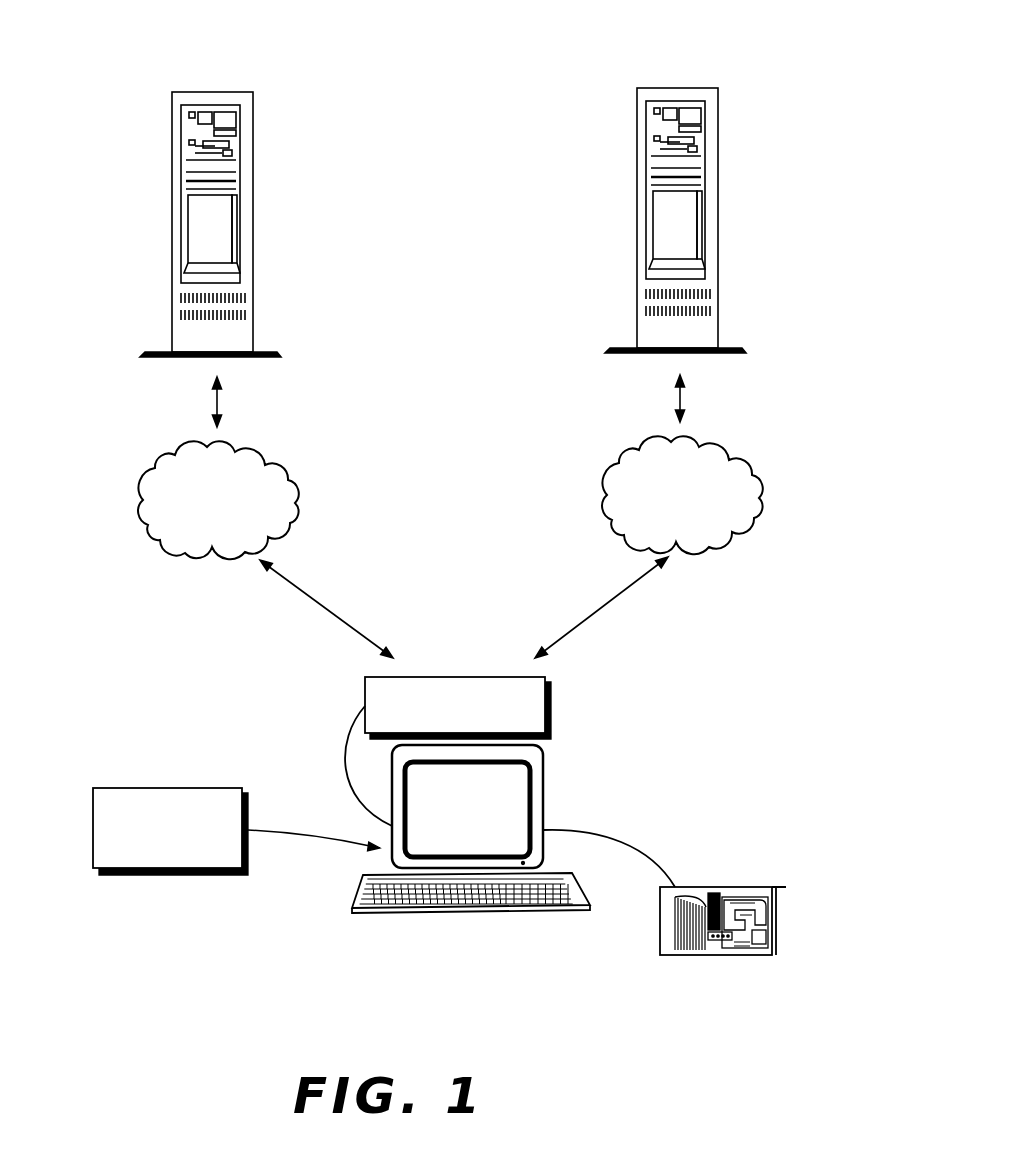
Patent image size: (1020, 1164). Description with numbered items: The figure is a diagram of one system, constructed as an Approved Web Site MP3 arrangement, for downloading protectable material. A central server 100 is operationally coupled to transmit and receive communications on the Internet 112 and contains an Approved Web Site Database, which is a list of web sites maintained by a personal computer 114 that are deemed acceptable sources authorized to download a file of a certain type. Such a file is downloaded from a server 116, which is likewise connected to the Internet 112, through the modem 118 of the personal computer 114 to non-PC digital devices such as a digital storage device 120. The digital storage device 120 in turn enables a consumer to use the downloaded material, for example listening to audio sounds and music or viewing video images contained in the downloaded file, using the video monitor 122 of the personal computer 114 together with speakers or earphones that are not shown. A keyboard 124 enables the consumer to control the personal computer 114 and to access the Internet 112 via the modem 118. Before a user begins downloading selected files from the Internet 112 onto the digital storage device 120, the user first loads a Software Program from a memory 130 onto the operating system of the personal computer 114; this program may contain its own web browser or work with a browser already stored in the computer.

The central server 100 is at (253, 146).
The server 116 is at (715, 153).
The Internet 112 is at (295, 494).
The modem 118 is at (552, 714).
The personal computer 114 is at (506, 806).
The video monitor 122 is at (446, 827).
The keyboard 124 is at (393, 913).
The memory 130 is at (182, 788).
The digital storage device 120 is at (781, 931).